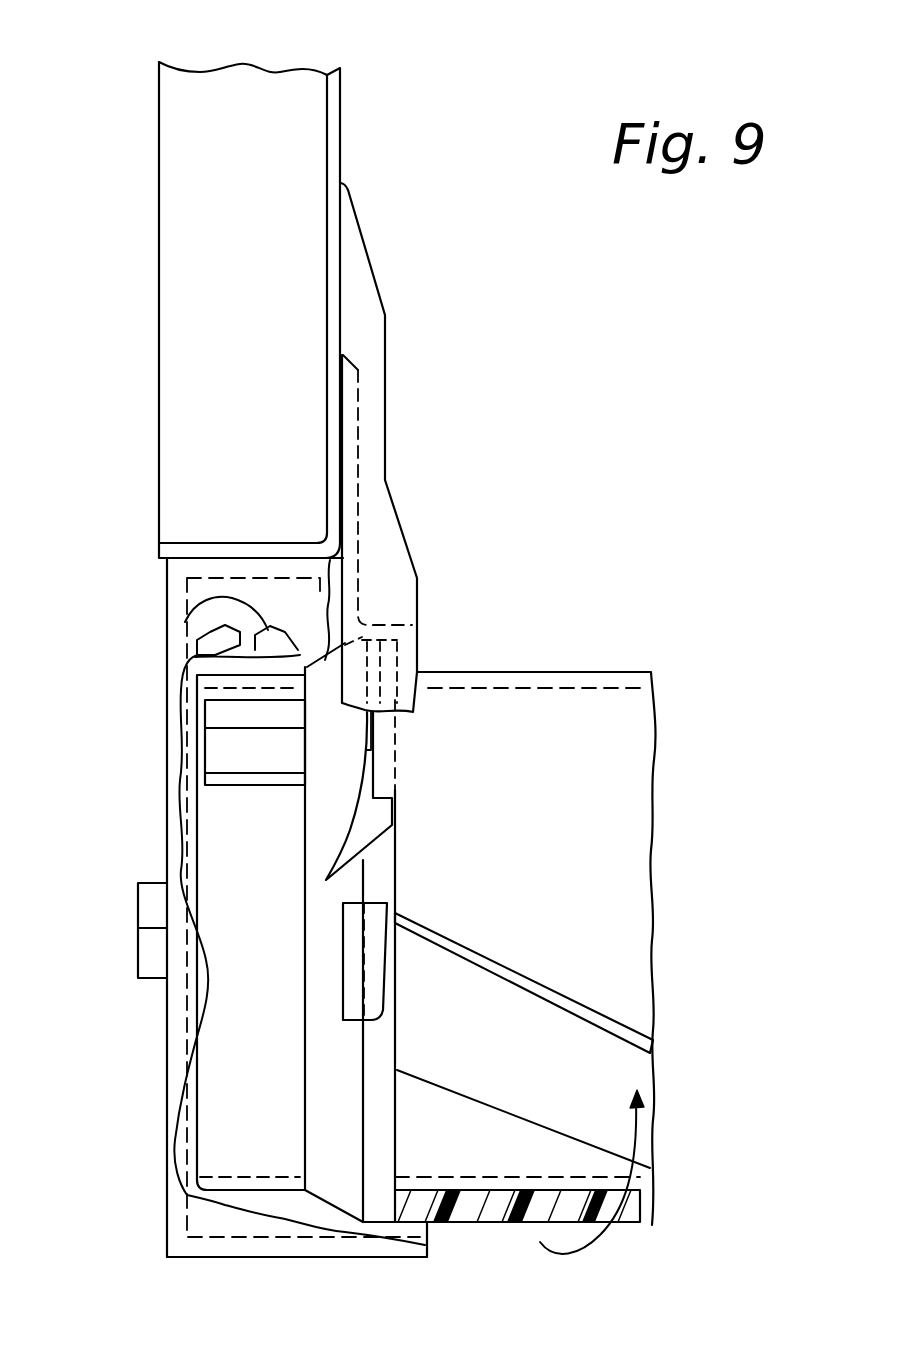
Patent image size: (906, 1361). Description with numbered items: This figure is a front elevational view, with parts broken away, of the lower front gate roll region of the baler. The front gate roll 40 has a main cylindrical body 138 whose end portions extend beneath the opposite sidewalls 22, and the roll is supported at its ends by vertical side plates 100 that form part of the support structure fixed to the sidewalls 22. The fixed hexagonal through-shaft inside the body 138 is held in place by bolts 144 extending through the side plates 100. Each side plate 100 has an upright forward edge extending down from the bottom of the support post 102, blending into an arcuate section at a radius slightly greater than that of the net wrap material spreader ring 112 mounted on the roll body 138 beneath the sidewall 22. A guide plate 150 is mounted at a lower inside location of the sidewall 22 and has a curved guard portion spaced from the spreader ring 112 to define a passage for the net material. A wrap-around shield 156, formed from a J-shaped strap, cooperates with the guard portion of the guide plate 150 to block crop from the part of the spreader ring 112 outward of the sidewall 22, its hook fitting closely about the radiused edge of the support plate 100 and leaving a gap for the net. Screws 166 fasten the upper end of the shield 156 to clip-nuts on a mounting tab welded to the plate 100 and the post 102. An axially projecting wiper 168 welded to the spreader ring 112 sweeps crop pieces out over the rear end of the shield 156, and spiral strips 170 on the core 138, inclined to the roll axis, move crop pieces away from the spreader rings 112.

The sidewall 22 is at (342, 120).
The front gate roll 40 is at (590, 664).
The vertical side plate 100 is at (195, 1130).
The support post 102 is at (265, 420).
The net wrap material spreader ring 112 is at (330, 892).
The main cylindrical body 138 is at (637, 992).
The bolt 144 is at (151, 883).
The guide plate 150 is at (427, 558).
The wrap-around shield 156 is at (305, 1258).
The screw 166 is at (200, 597).
The wiper 168 is at (250, 748).
The spiral strip 170 is at (508, 972).